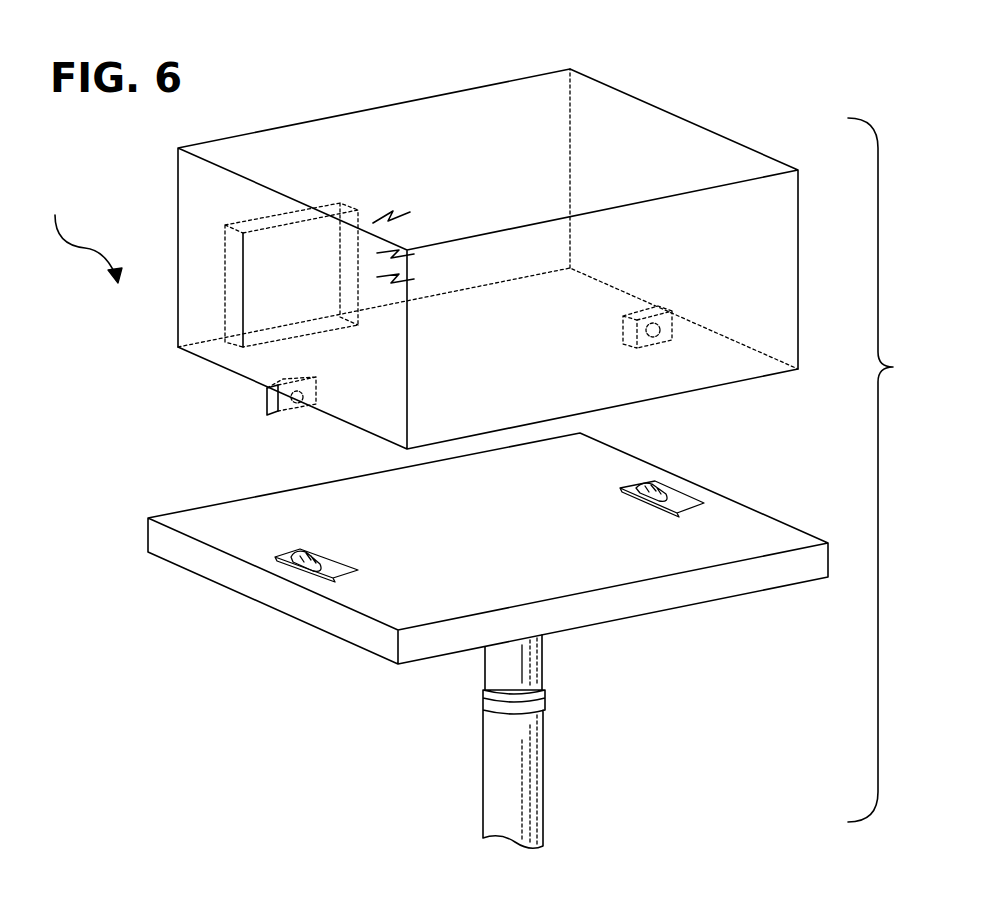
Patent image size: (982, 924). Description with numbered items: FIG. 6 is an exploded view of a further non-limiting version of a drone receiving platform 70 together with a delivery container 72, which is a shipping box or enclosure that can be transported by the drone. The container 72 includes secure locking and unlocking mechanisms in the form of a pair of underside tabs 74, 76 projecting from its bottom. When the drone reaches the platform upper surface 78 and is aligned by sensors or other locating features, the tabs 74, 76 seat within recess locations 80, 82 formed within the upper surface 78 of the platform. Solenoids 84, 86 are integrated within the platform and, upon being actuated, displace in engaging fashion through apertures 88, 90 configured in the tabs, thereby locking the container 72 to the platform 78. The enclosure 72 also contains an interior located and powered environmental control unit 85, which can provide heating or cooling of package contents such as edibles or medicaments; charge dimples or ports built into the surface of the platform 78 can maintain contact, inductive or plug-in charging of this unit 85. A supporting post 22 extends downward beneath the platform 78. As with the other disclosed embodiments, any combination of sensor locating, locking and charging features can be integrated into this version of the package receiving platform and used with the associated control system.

The drone receiving platform 70 is at (81, 237).
The delivery container 72 is at (440, 130).
The underside tab 74 is at (265, 401).
The underside tab 76 is at (673, 328).
The platform upper surface 78 is at (512, 551).
The recess location 80 is at (332, 573).
The recess location 82 is at (679, 510).
The solenoid 84 is at (308, 552).
The environmental control unit 85 is at (270, 214).
The solenoid 86 is at (642, 484).
The aperture 88 is at (282, 415).
The aperture 90 is at (652, 352).
The post 22 is at (543, 670).